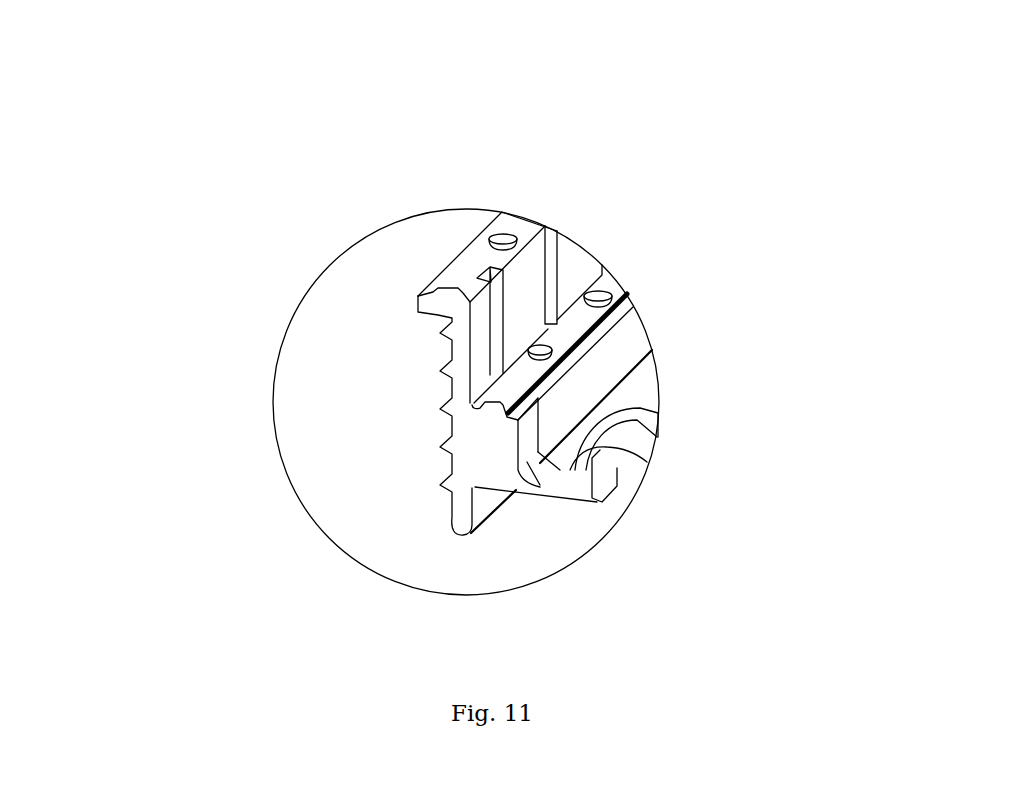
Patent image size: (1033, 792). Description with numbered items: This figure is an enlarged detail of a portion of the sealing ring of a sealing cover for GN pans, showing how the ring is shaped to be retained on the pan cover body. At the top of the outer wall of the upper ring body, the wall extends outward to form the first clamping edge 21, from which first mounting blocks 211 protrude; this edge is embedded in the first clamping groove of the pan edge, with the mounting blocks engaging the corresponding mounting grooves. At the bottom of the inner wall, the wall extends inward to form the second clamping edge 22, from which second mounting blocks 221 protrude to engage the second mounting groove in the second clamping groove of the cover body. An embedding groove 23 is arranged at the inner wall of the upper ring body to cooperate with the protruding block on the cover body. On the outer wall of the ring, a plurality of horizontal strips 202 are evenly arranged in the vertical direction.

The first clamping edge 21 is at (467, 250).
The first mounting block 211 is at (504, 232).
The embedding groove 23 is at (555, 260).
The second clamping edge 22 is at (558, 345).
The second mounting block 221 is at (608, 296).
The horizontal strip 202 is at (452, 404).